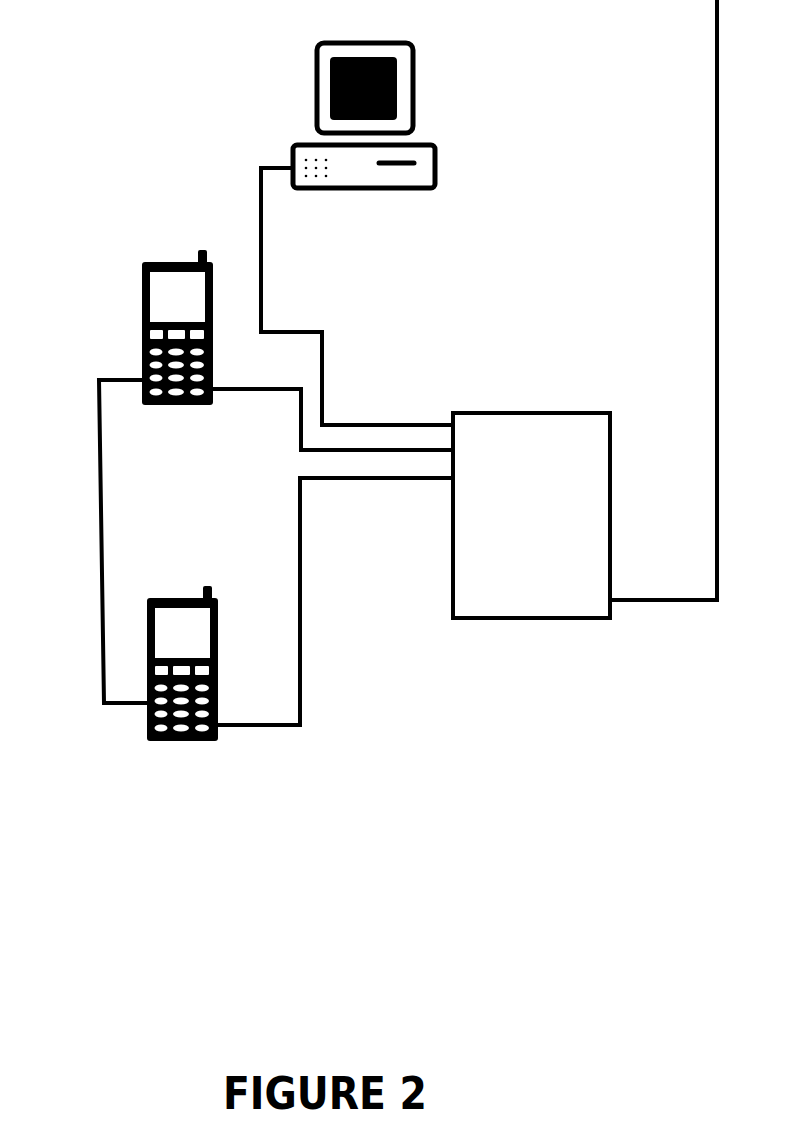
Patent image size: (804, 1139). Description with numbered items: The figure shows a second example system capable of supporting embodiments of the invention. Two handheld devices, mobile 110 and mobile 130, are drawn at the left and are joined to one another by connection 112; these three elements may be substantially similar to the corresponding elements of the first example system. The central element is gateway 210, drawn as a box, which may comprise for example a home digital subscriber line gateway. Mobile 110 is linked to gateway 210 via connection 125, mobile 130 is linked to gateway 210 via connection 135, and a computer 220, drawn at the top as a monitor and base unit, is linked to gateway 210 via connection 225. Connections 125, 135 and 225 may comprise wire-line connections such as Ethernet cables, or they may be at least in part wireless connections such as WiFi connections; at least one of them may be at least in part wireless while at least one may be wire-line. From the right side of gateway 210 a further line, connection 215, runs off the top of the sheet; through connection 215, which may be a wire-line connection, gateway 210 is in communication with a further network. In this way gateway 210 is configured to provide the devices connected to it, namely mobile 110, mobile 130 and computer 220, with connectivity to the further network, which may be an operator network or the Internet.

The mobile 110 is at (178, 406).
The connection 112 is at (100, 568).
The connection 125 is at (268, 391).
The mobile 130 is at (193, 741).
The connection 135 is at (300, 612).
The gateway 210 is at (531, 515).
The connection 215 is at (717, 215).
The computer 220 is at (436, 158).
The connection 225 is at (261, 284).